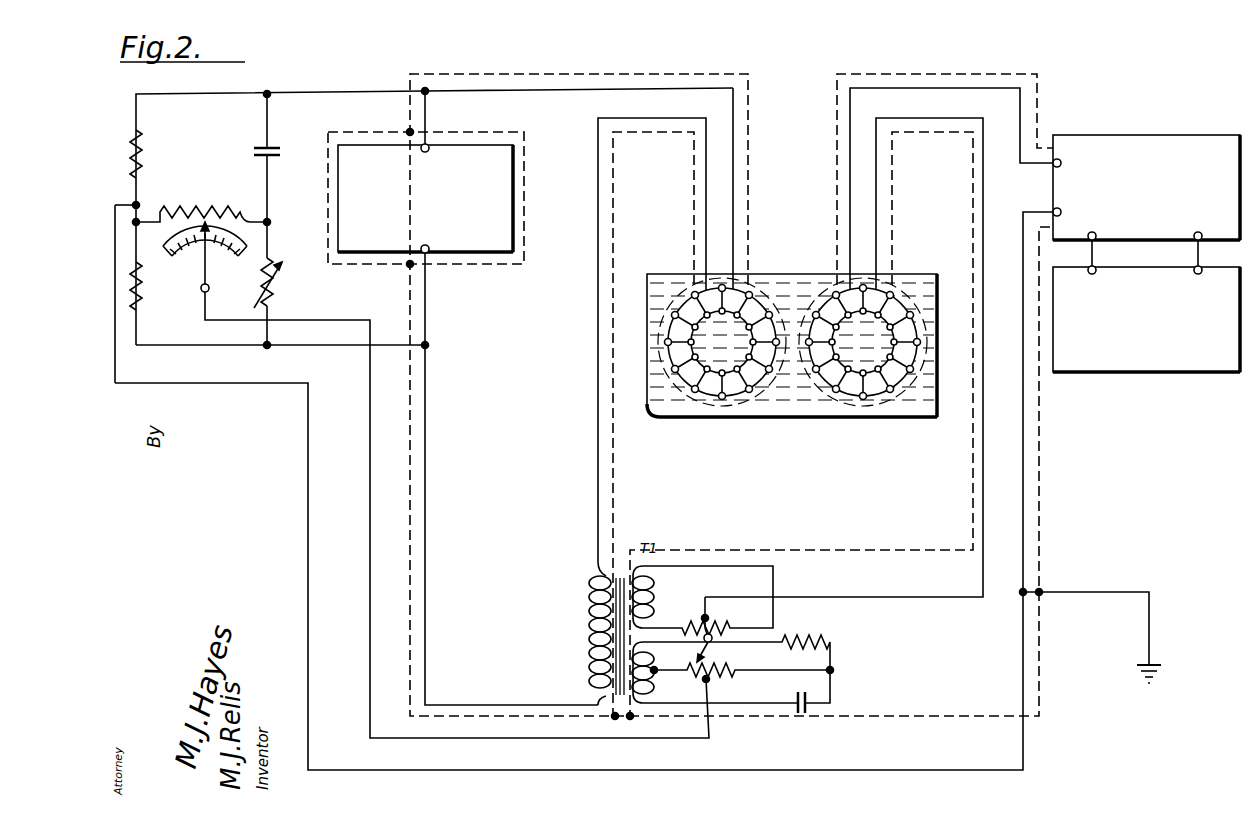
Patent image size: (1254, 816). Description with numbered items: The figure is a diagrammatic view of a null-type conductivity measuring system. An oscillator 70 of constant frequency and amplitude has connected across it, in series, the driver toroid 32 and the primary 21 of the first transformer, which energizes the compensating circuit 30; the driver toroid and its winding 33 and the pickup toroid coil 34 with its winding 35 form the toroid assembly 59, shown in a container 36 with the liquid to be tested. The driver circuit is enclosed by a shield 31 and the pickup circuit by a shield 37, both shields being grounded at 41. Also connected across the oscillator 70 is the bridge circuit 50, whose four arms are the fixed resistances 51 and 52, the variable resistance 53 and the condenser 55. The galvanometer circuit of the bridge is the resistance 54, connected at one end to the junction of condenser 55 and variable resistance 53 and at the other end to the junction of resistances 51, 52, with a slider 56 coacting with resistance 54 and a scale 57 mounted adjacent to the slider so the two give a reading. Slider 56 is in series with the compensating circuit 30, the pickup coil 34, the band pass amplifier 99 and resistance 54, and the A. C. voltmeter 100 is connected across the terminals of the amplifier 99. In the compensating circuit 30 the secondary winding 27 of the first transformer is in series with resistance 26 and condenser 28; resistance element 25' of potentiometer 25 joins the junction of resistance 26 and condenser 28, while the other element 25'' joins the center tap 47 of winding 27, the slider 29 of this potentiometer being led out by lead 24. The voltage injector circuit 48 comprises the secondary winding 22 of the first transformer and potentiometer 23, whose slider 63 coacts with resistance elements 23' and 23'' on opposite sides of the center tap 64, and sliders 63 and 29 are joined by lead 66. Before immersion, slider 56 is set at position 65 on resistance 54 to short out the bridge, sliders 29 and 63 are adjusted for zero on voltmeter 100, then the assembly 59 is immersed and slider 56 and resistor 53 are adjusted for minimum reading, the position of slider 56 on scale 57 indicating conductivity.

The primary winding 21 is at (590, 640).
The secondary winding 22 is at (652, 597).
The potentiometer 23 is at (728, 611).
The resistance element 23' is at (672, 611).
The resistance element 23'' is at (737, 611).
The slider lead 24 is at (706, 682).
The potentiometer 25 is at (742, 680).
The resistance element 25' is at (733, 689).
The resistance element 25'' is at (693, 689).
The resistance 26 is at (810, 640).
The secondary winding 27 is at (648, 700).
The condenser 28 is at (820, 700).
The slider 29 is at (742, 676).
The compensating circuit 30 is at (652, 755).
The shield 31 is at (500, 74).
The driver toroid 32 is at (665, 346).
The toroidal coil winding 33 is at (690, 376).
The pickup toroid coil 34 is at (925, 344).
The toroidal coil winding 35 is at (893, 380).
The container 36 is at (938, 408).
The shield 37 is at (1040, 505).
The ground 41 is at (1160, 668).
The center tap 47 is at (650, 680).
The voltage injector circuit 48 is at (718, 566).
The bridge circuit 50 is at (210, 126).
The fixed resistance 51 is at (142, 299).
The fixed resistance 52 is at (142, 154).
The variable resistance 53 is at (262, 296).
The resistance 54 is at (208, 210).
The condenser 55 is at (254, 152).
The slider 56 is at (207, 264).
The scale 57 is at (176, 247).
The toroid assembly 59 is at (792, 346).
The slider 63 is at (704, 641).
The center tap 64 is at (700, 612).
The position 65 is at (170, 210).
The lead 66 is at (703, 658).
The oscillator 70 is at (513, 192).
The band pass amplifier 99 is at (1138, 242).
The A. C. voltmeter 100 is at (1135, 373).